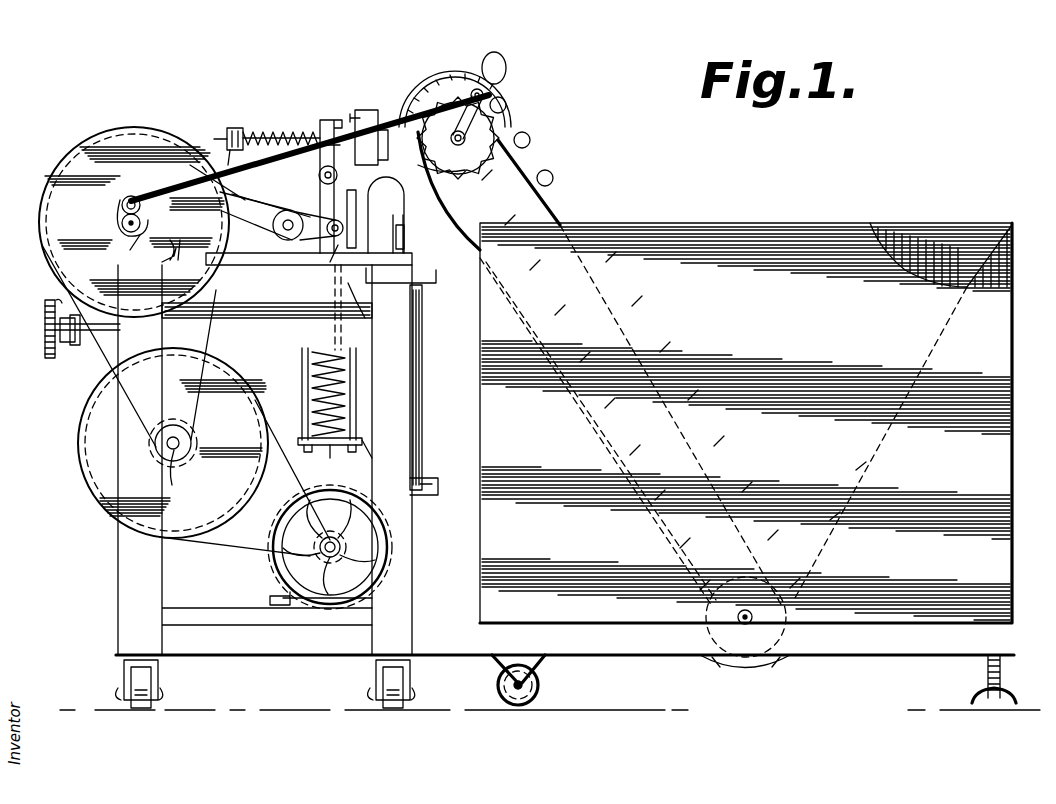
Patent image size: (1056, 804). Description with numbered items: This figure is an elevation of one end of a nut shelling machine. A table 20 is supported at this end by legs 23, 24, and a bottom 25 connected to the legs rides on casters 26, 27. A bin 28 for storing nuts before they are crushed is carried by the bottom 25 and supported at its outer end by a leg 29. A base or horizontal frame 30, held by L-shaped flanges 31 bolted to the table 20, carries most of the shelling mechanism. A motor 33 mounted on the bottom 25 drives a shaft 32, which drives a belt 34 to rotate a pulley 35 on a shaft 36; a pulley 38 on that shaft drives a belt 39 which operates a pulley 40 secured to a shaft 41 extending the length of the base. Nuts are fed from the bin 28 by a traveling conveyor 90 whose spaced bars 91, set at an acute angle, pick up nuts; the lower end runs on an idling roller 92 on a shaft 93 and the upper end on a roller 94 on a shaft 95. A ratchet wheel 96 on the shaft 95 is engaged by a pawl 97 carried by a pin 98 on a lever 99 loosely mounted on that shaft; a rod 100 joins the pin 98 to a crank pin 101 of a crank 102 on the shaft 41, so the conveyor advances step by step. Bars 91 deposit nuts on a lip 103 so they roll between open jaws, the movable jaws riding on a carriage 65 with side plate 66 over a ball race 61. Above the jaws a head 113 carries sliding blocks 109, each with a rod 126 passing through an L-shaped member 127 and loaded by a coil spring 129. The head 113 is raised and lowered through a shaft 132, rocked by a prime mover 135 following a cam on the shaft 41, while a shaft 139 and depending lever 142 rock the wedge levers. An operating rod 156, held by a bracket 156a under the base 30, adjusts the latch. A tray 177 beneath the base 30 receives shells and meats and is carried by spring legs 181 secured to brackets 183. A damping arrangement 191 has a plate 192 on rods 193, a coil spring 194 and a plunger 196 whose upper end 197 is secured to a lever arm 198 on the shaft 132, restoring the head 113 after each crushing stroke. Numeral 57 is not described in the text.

The table 20 is at (280, 305).
The leg 23 is at (410, 528).
The leg 24 is at (135, 598).
The bottom 25 is at (596, 640).
The caster 26 is at (160, 697).
The caster 27 is at (498, 688).
The bin 28 is at (800, 238).
The leg 29 is at (985, 679).
The base or horizontal frame 30 is at (238, 260).
The L-shaped flange 31 is at (371, 308).
The shaft 32 is at (300, 545).
The motor 33 is at (333, 500).
The belt 34 is at (275, 425).
The pulley 35 is at (98, 488).
The shaft 36 is at (180, 477).
The pulley 38 is at (176, 425).
The belt 39 is at (105, 360).
The pulley 40 is at (58, 228).
The shaft 41 is at (155, 248).
The ratchet wheel 57 is at (45, 330).
The ball race 61 is at (406, 243).
The carriage 65 is at (358, 220).
The side plate 66 is at (405, 225).
The traveling conveyor 90 is at (555, 200).
The bar 91 is at (530, 142).
The idling roller 92 is at (712, 655).
The shaft 93 is at (746, 624).
The roller 94 is at (553, 172).
The shaft 95 is at (506, 108).
The ratchet wheel 96 is at (466, 172).
The pawl 97 is at (462, 95).
The pin 98 is at (494, 52).
The lever 99 is at (458, 130).
The rod 100 is at (224, 170).
The crank pin 101 is at (134, 197).
The crank 102 is at (120, 223).
The lip 103 is at (404, 188).
The block 109 is at (366, 110).
The head 113 is at (360, 108).
The rod 126 is at (222, 130).
The L-shaped member 127 is at (333, 120).
The coil spring 129 is at (278, 130).
The shaft 132 is at (278, 243).
The prime mover 135 is at (251, 186).
The shaft 139 is at (320, 118).
The depending lever 142 is at (326, 200).
The operating rod 156 is at (80, 345).
The bracket 156a is at (62, 305).
The tray 177 is at (440, 275).
The leg 181 is at (424, 382).
The bracket 183 is at (440, 488).
The damping arrangement 191 is at (358, 388).
The plate 192 is at (325, 455).
The rod 193 is at (298, 372).
The coil spring 194 is at (348, 408).
The plunger 196 is at (382, 456).
The upper end of plunger 197 is at (319, 266).
The lever arm 198 is at (262, 192).